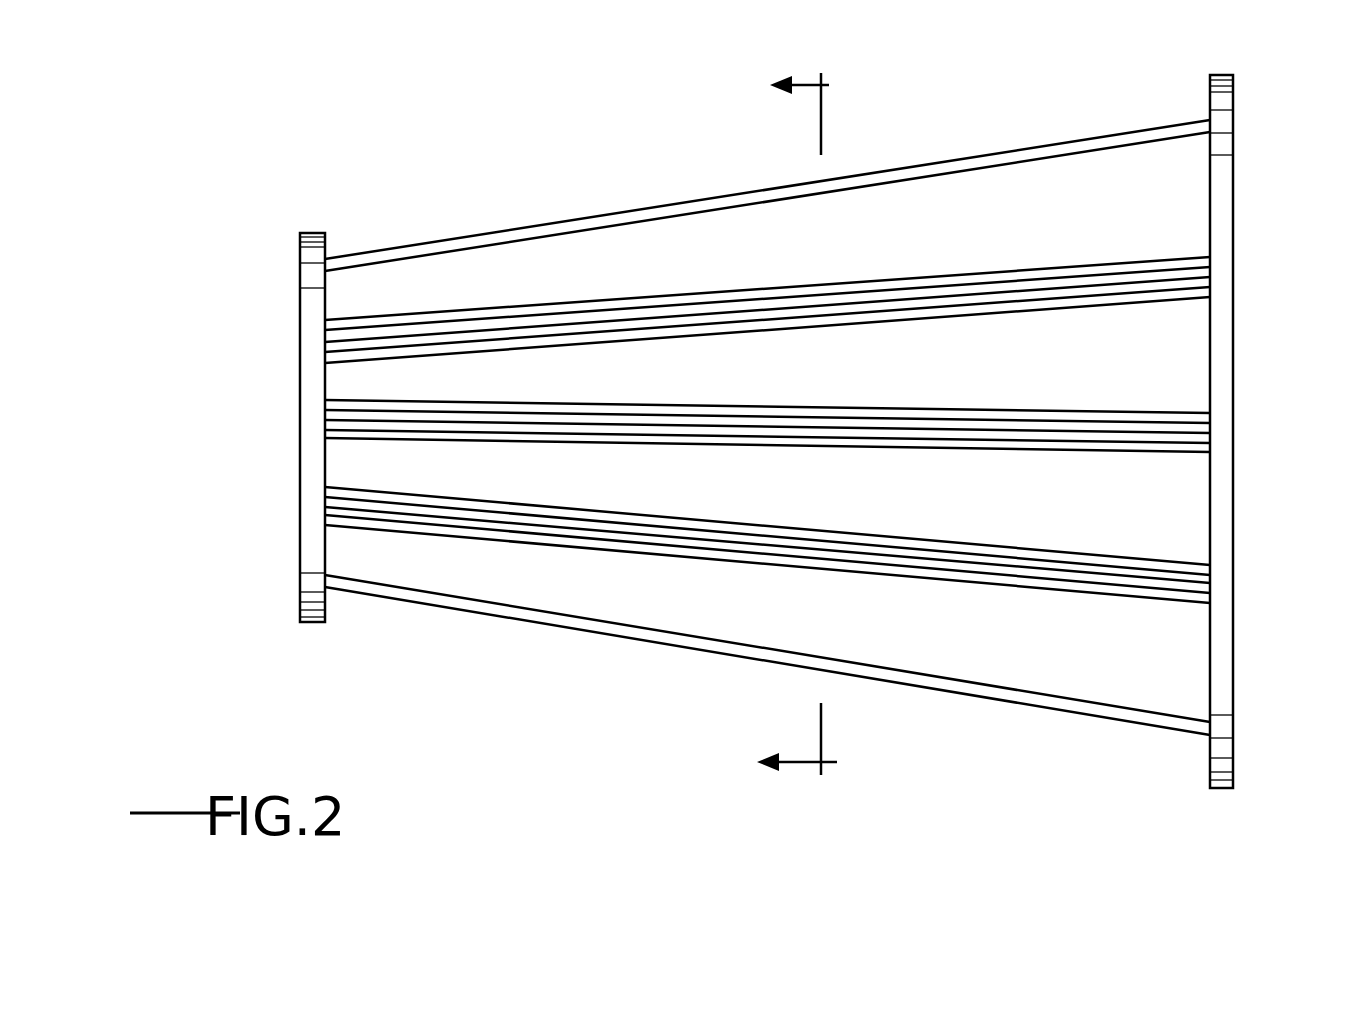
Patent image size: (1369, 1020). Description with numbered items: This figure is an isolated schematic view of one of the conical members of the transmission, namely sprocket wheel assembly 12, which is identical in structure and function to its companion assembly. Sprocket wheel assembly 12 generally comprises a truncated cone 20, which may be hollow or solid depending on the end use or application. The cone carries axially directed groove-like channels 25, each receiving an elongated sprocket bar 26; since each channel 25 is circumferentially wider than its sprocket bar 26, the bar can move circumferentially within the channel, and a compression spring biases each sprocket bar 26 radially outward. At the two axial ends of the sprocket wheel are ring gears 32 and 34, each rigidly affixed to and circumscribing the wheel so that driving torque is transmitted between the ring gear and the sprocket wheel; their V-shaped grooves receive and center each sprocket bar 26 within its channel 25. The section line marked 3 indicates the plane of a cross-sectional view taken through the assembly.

The sprocket wheel assembly 12 is at (1148, 120).
The truncated cone 20 is at (1195, 175).
The channel 25 is at (703, 291).
The sprocket bar 26 is at (440, 240).
The ring gear 32 is at (1235, 765).
The ring gear 34 is at (299, 604).
The section line 3- 3 is at (806, 424).